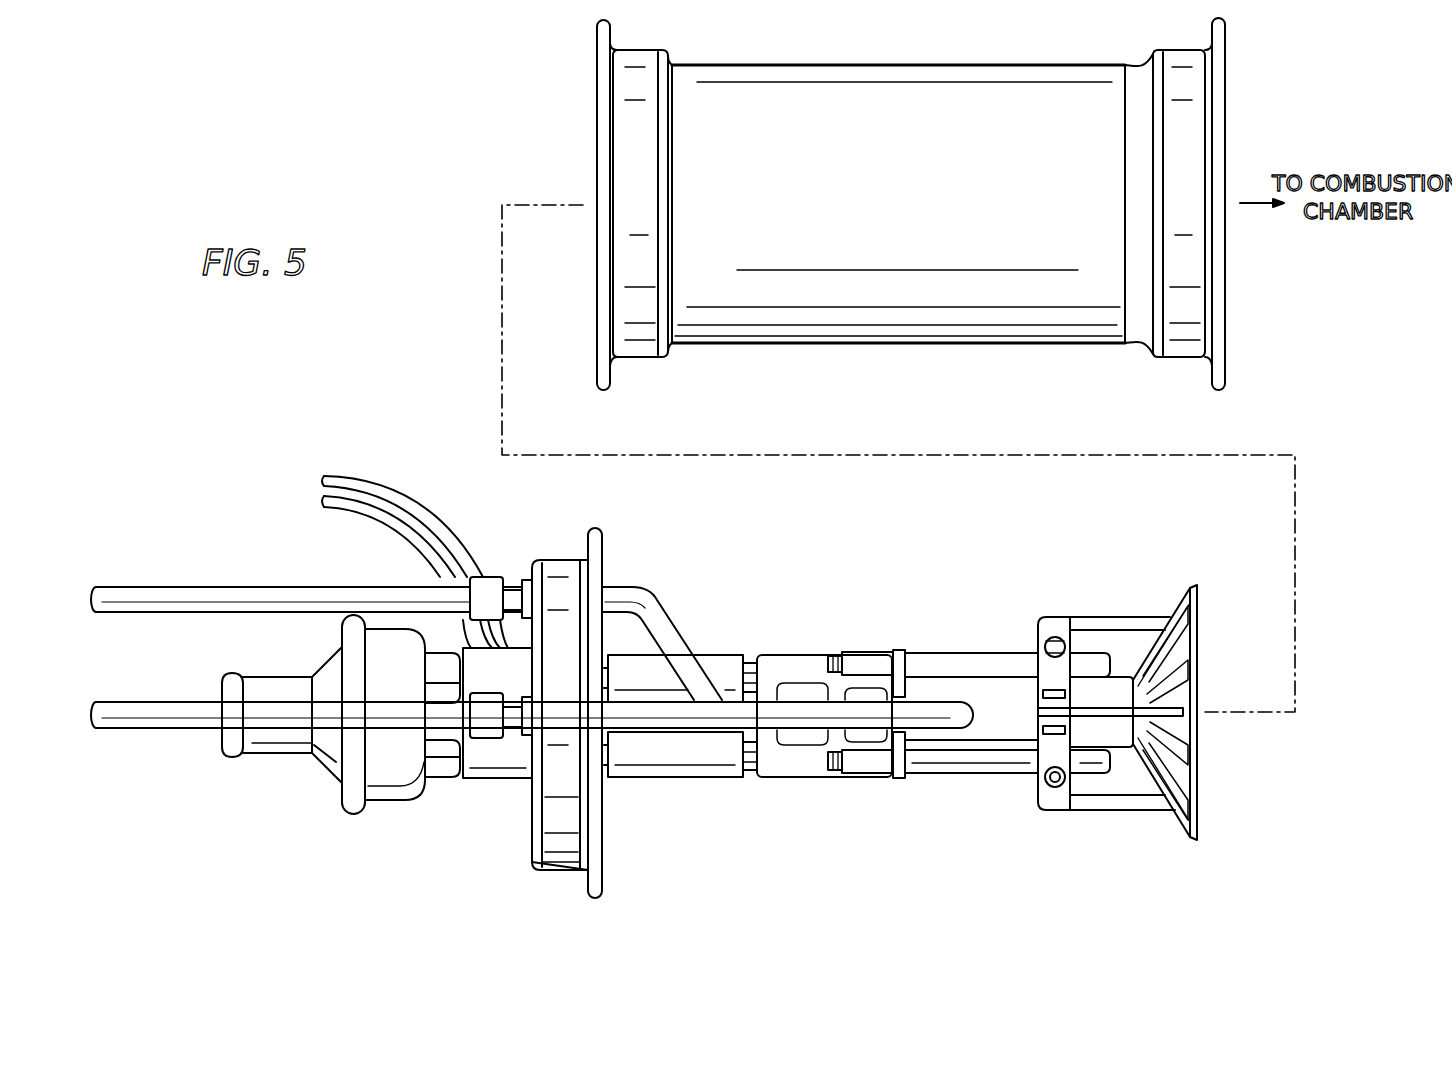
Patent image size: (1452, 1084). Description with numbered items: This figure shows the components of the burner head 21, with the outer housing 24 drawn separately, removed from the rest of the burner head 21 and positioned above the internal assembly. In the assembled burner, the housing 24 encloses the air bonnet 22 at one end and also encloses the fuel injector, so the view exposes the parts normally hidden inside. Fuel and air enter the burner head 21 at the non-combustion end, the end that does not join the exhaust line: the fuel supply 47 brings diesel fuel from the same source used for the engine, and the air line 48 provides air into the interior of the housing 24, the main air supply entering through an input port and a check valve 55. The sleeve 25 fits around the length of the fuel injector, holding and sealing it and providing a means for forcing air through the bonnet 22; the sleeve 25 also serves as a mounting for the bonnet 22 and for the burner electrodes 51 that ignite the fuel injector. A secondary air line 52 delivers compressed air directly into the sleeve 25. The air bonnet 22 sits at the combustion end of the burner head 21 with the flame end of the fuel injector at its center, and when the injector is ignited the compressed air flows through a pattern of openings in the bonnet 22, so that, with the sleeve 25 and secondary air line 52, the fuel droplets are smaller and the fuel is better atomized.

The burner head 21 is at (1347, 108).
The air bonnet 22 is at (1198, 613).
The outer housing 24 is at (911, 194).
The sleeve 25 is at (948, 752).
The fuel supply 47 is at (187, 587).
The air line 48 is at (122, 733).
The burner electrodes 51 is at (968, 653).
The secondary air line 52 is at (968, 714).
The check valve 55 is at (220, 685).